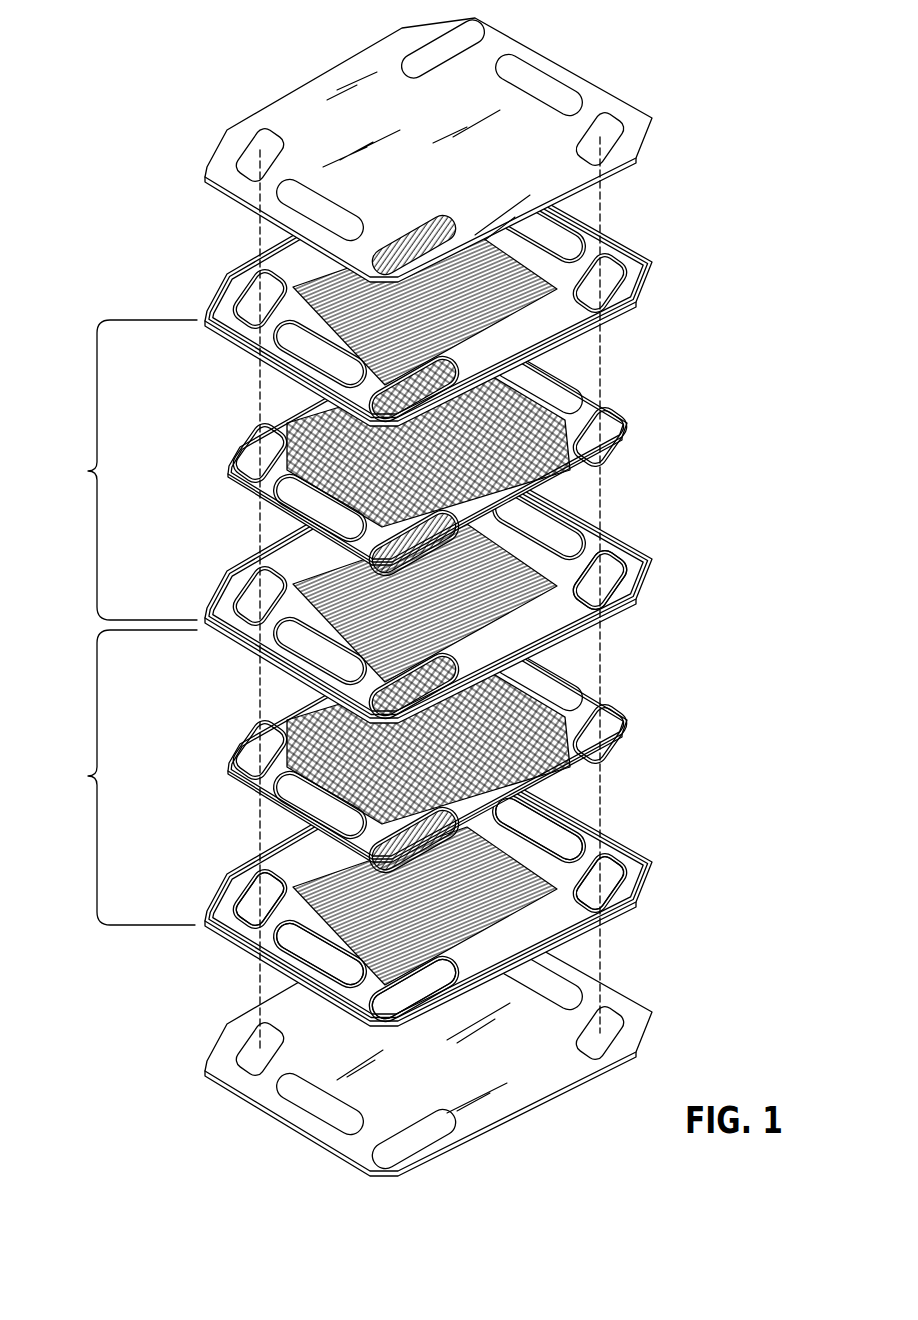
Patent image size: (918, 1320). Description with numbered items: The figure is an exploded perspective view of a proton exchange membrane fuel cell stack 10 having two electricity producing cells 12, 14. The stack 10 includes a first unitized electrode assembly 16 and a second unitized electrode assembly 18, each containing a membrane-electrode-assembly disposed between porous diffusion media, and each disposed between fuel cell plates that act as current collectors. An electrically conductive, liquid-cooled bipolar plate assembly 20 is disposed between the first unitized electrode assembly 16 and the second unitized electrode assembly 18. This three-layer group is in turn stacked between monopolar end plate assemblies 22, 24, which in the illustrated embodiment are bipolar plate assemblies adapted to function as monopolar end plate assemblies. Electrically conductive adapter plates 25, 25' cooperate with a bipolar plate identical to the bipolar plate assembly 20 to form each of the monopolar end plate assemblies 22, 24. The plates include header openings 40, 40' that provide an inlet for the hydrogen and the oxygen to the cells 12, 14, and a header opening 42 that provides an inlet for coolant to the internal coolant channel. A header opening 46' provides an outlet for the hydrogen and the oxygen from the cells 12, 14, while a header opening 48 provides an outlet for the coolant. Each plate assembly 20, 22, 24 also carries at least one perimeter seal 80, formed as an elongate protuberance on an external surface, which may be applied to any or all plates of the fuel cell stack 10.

The fuel cell stack 10 is at (173, 83).
The electricity producing cell 12 is at (88, 471).
The electricity producing cell 14 is at (88, 776).
The first unitized electrode assembly 16 is at (628, 425).
The second unitized electrode assembly 18 is at (627, 722).
The bipolar plate assembly 20 is at (653, 562).
The monopolar end plate assembly 22 is at (653, 266).
The monopolar end plate assembly 24 is at (653, 866).
The adapter plate 25 is at (495, 150).
The adapter plate 25' is at (494, 1044).
The header opening 40 is at (413, 1024).
The header opening 40' is at (206, 885).
The header opening 42 is at (338, 960).
The header opening 46' is at (646, 883).
The header opening 48 is at (553, 836).
The perimeter seal 80 is at (610, 560).